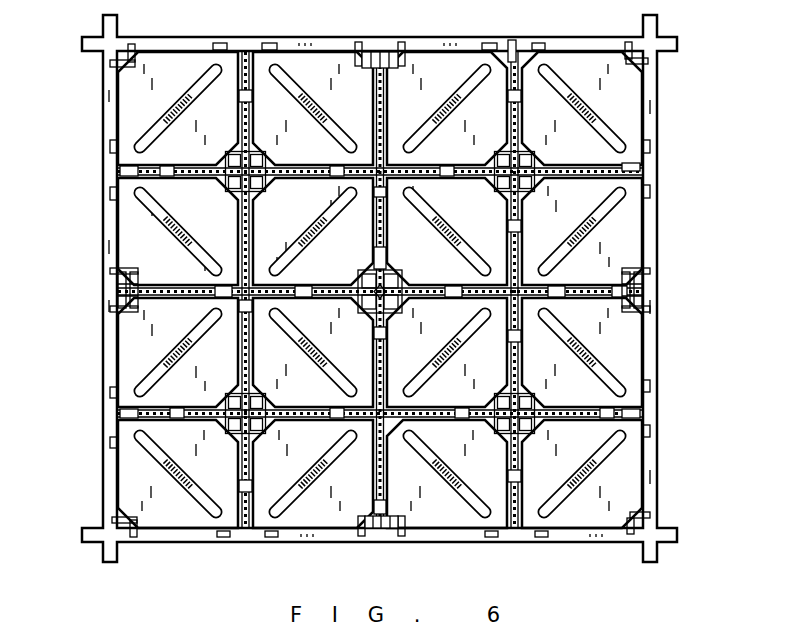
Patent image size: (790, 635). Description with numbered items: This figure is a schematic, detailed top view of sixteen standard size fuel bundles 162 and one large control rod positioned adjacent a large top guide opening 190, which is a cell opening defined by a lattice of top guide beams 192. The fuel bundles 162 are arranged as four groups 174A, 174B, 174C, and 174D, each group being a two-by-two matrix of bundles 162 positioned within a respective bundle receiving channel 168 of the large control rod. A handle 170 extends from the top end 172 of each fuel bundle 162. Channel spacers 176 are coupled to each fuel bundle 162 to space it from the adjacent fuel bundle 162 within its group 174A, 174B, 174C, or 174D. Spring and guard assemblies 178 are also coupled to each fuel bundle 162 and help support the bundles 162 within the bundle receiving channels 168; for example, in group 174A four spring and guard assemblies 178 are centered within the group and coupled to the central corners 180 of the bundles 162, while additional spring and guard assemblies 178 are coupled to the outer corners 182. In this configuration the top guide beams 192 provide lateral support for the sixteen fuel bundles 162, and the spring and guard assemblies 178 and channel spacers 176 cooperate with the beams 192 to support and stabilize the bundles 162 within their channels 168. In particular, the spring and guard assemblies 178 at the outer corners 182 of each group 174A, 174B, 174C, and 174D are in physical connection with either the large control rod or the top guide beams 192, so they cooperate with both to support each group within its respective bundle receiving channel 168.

The fuel bundle 162 is at (143, 358).
The bundle receiving channel 168 is at (174, 264).
The handle 170 is at (328, 197).
The top end 172 is at (363, 253).
The group of fuel bundles 174A is at (155, 385).
The group of fuel bundles 174B is at (174, 187).
The group of fuel bundles 174C is at (600, 130).
The group of fuel bundles 174D is at (592, 504).
The channel spacer 176 is at (505, 54).
The spring and guard assembly 178 is at (331, 50).
The central corner 180 is at (204, 436).
The outer corner 182 is at (342, 307).
The large top guide opening 190 is at (120, 93).
The top guide beam 192 is at (204, 38).